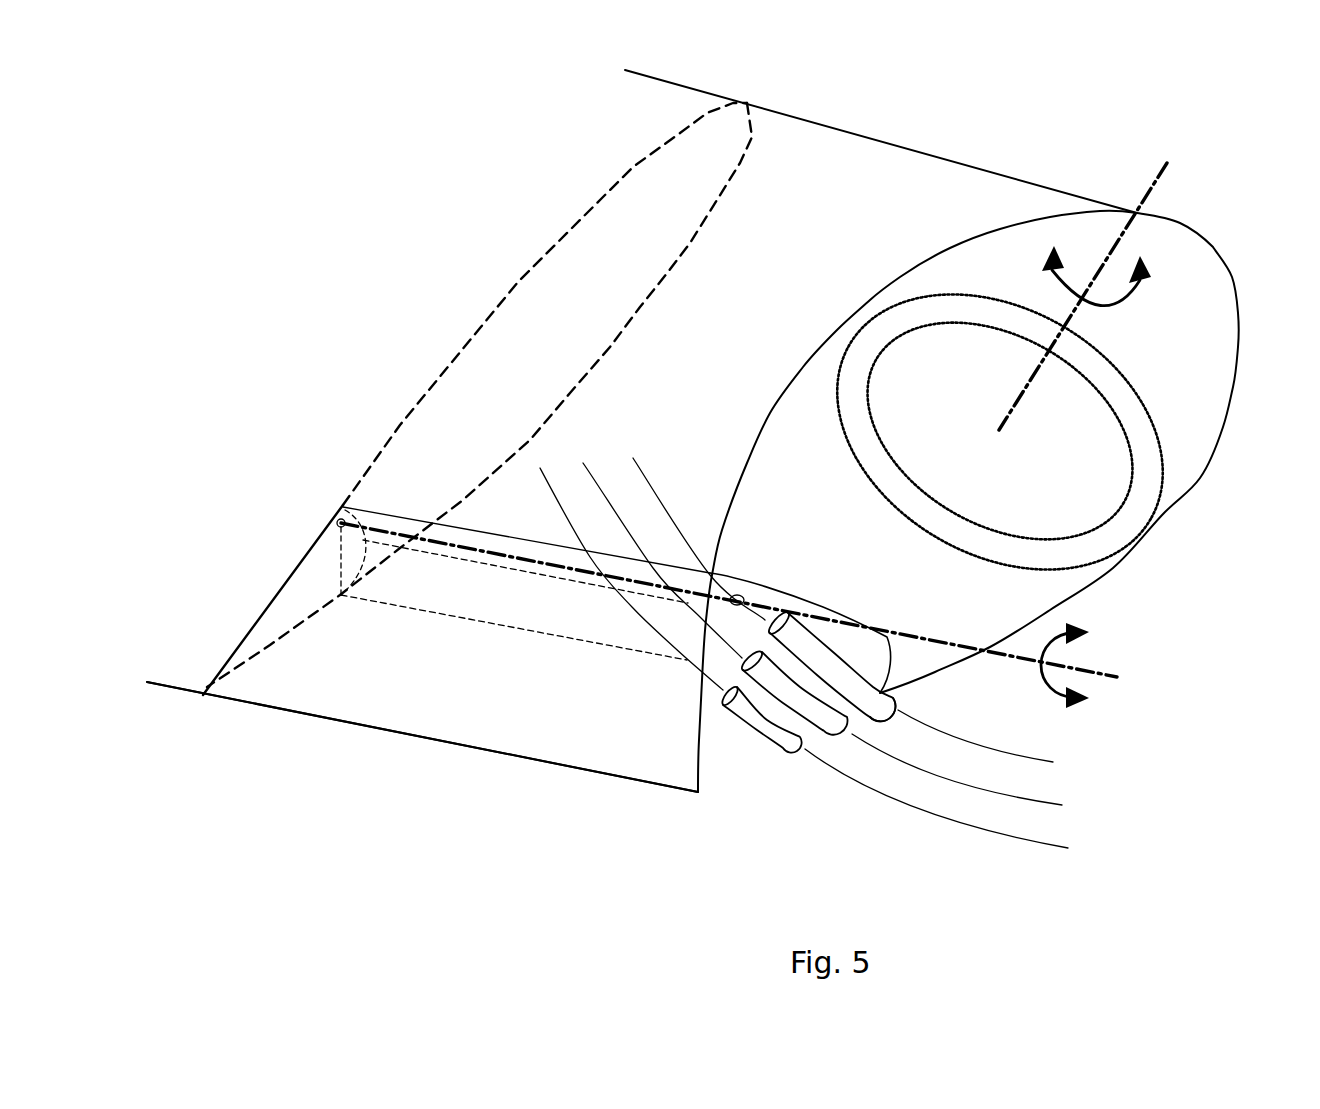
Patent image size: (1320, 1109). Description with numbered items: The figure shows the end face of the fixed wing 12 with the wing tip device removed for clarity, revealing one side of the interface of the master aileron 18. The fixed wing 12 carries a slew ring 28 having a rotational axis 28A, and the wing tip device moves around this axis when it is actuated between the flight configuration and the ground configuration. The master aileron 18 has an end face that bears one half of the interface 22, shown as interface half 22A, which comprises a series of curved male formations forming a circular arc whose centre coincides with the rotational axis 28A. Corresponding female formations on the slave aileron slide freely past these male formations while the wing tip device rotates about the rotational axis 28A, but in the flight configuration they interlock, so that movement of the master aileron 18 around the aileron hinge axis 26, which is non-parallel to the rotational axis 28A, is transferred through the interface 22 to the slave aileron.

The fixed wing 12 is at (448, 298).
The master aileron 18 is at (397, 685).
The interface 22 is at (733, 740).
The interface half with curved male formations 22A is at (875, 699).
The aileron hinge axis 26 is at (1083, 668).
The slew ring 28 is at (1138, 500).
The rotational axis 28A is at (1147, 197).